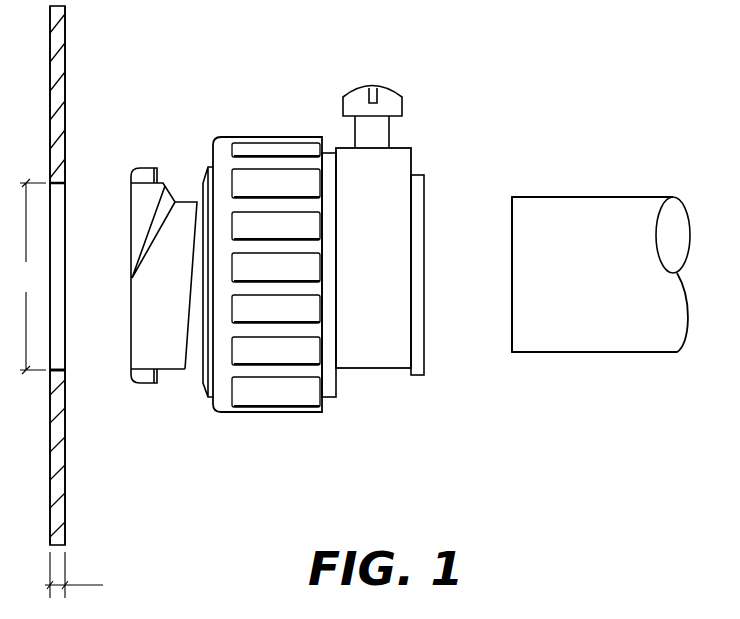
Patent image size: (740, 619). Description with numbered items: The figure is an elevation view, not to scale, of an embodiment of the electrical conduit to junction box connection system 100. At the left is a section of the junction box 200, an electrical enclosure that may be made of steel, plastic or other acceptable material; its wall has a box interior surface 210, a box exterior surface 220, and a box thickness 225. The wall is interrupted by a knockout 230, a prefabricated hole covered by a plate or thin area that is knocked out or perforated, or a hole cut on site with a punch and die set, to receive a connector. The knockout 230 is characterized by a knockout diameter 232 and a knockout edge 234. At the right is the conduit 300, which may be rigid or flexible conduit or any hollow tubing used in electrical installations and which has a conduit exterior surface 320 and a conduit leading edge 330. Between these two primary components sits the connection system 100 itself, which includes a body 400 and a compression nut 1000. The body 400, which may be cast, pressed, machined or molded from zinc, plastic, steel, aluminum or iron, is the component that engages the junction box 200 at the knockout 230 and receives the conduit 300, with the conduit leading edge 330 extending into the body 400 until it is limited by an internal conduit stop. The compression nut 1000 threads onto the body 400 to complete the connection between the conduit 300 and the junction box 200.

The electrical conduit to junction box connection system 100 is at (376, 218).
The junction box 200 is at (123, 302).
The box interior surface 210 is at (50, 475).
The box exterior surface 220 is at (66, 492).
The box thickness 225 is at (99, 575).
The knockout 230 is at (63, 342).
The knockout diameter 232 is at (30, 276).
The knockout edge 234 is at (66, 366).
The conduit 300 is at (572, 274).
The conduit exterior surface 320 is at (587, 352).
The conduit leading edge 330 is at (509, 338).
The body 400 is at (411, 147).
The compression nut 1000 is at (240, 137).